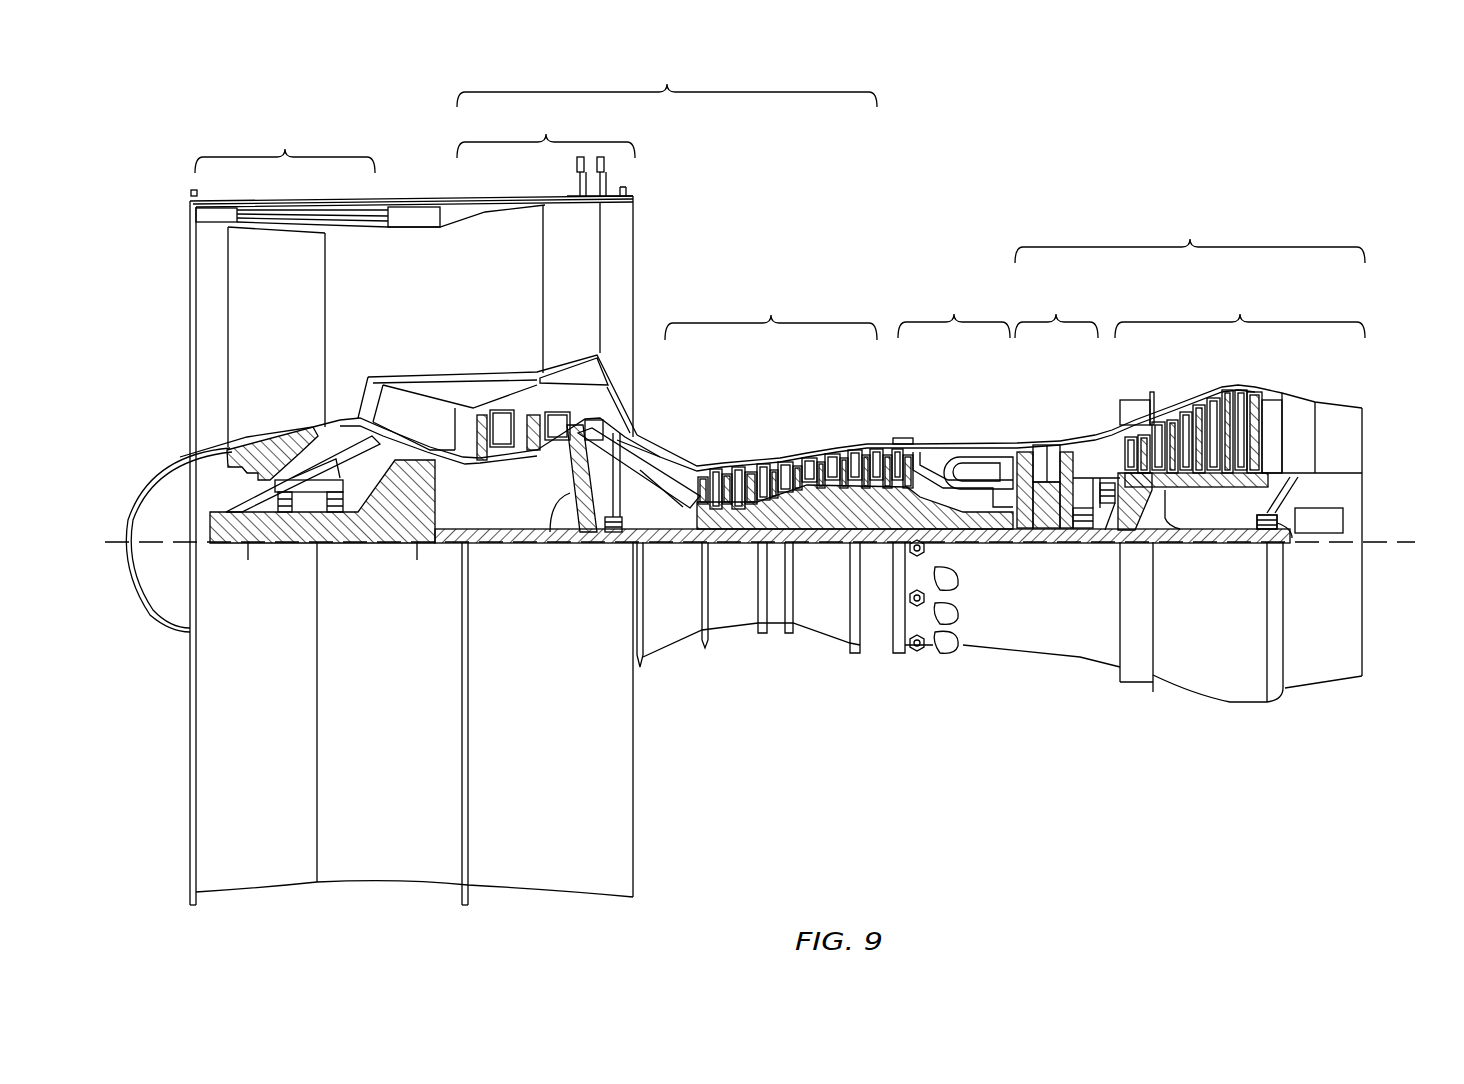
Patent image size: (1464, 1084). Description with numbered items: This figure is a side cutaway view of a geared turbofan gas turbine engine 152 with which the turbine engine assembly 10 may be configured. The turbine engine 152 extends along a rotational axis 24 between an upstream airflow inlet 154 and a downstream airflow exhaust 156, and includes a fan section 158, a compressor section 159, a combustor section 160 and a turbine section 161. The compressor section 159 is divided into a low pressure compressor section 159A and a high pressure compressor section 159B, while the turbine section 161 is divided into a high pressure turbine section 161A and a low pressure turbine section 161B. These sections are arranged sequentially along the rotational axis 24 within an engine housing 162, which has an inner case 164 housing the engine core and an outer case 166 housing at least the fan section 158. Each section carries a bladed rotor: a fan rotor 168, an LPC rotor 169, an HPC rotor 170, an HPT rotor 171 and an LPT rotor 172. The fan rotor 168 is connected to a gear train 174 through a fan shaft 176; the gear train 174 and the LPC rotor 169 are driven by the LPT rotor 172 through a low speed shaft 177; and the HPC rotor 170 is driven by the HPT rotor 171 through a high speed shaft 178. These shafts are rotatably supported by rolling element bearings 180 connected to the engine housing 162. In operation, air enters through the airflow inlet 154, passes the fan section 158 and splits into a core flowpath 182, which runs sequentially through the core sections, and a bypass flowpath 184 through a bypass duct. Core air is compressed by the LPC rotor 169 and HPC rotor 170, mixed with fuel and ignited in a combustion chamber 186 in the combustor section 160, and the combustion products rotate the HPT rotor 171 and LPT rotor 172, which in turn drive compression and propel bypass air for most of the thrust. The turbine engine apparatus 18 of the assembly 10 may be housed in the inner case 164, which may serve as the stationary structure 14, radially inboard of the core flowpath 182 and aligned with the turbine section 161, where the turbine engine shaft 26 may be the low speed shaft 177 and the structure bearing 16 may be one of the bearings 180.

The turbine engine 152 is at (157, 178).
The airflow inlet 154 is at (187, 282).
The airflow exhaust 156 is at (1365, 440).
The fan section 158 is at (285, 281).
The compressor section 159 is at (758, 261).
The low pressure compressor section 159A is at (500, 282).
The high pressure compressor section 159B is at (789, 395).
The combustor section 160 is at (953, 395).
The turbine section 161 is at (1190, 233).
The high pressure turbine section 161A is at (1067, 405).
The low pressure turbine section 161B is at (1212, 378).
The engine housing 162 is at (665, 672).
The inner case 164 is at (875, 650).
The stationary structure 14 is at (939, 636).
The outer case 166 is at (586, 895).
The fan rotor 168 is at (232, 464).
The LPC rotor 169 is at (557, 546).
The HPC rotor 170 is at (822, 505).
The HPT rotor 171 is at (1040, 520).
The LPT rotor 172 is at (1185, 545).
The gear train 174 is at (400, 546).
The fan shaft 176 is at (248, 546).
The low speed shaft 177 is at (1232, 546).
The turbine engine shaft 26 is at (1241, 622).
The high speed shaft 178 is at (963, 545).
The bearings 180 is at (322, 548).
The core flowpath 182 is at (662, 460).
The bypass flowpath 184 is at (465, 309).
The combustion chamber 186 is at (962, 472).
The turbine engine assembly 10 is at (1363, 472).
The turbine engine apparatus 18 is at (1318, 500).
The structure bearing 16 is at (1290, 546).
The rotational axis 24 is at (1405, 560).